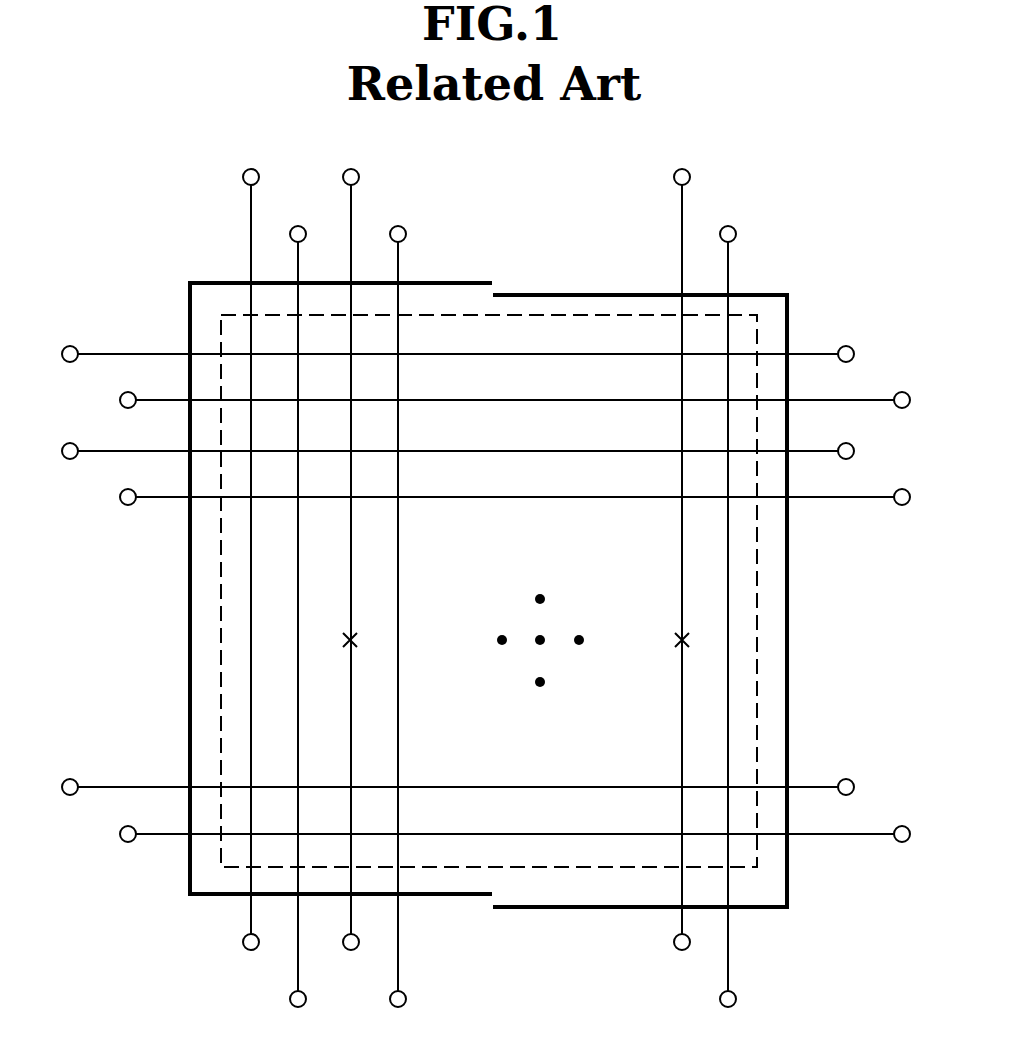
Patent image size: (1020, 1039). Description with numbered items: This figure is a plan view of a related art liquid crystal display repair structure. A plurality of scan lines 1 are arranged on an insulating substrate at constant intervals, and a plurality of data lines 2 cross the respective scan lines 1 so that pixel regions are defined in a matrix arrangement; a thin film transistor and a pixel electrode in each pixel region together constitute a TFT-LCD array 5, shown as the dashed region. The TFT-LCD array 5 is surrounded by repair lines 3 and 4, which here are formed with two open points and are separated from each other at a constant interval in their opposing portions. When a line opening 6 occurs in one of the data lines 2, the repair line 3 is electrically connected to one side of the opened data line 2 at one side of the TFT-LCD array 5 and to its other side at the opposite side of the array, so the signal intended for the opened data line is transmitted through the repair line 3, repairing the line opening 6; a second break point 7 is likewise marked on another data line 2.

The scan lines 1 is at (582, 834).
The data lines 2 is at (250, 690).
The repair line 3 is at (452, 283).
The repair line 4 is at (590, 295).
The TFT-LCD array 5 is at (757, 618).
The line opening 6 is at (357, 640).
The second touch point 7 is at (675, 640).